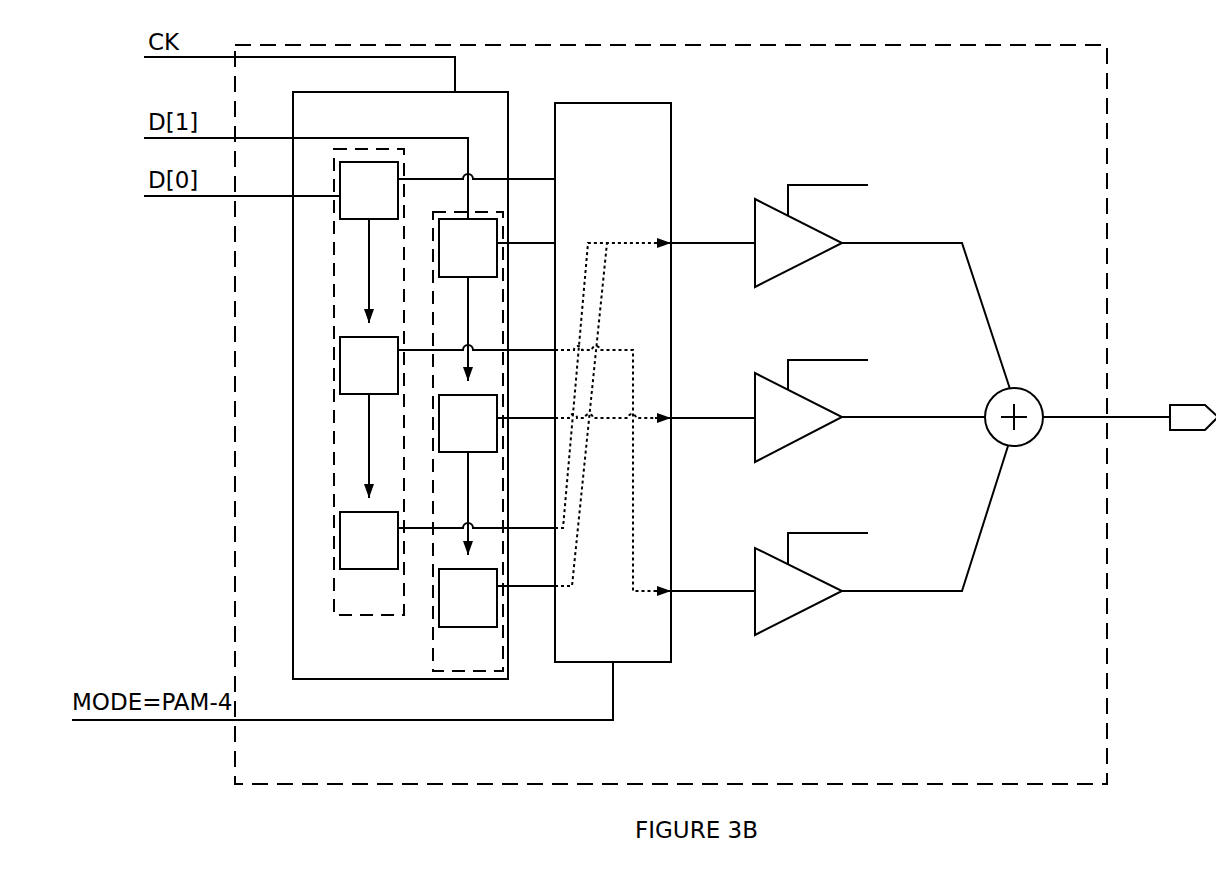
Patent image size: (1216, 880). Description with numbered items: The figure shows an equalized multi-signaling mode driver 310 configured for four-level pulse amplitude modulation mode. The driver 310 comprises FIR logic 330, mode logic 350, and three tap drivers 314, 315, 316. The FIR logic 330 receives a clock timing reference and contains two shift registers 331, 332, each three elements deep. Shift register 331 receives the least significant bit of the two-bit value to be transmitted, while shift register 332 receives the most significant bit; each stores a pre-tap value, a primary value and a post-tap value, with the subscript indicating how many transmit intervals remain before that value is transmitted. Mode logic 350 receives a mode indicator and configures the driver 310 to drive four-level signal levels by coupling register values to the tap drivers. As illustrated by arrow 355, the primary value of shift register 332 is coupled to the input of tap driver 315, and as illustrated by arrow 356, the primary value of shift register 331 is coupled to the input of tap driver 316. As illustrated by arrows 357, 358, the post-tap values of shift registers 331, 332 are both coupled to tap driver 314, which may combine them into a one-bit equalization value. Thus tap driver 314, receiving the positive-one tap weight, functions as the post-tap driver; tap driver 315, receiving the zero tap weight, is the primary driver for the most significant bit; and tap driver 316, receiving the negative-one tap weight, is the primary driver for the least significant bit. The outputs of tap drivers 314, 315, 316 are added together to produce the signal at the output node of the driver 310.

The driver 310 is at (385, 774).
The FIR logic 330 is at (423, 128).
The shift register 331 is at (390, 606).
The shift register 332 is at (490, 659).
The mode logic 350 is at (635, 137).
The arrow 355 is at (640, 412).
The arrow 356 is at (633, 553).
The arrow 357 is at (588, 262).
The arrow 358 is at (598, 328).
The tap driver 314 is at (808, 255).
The tap driver 315 is at (808, 431).
The tap driver 316 is at (808, 604).